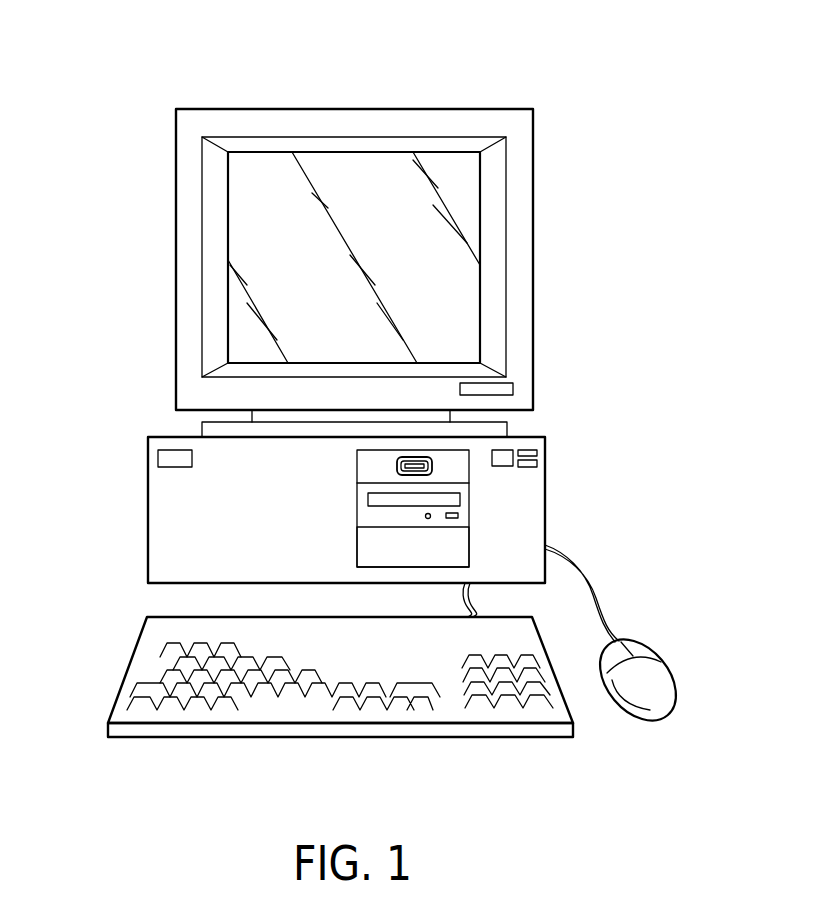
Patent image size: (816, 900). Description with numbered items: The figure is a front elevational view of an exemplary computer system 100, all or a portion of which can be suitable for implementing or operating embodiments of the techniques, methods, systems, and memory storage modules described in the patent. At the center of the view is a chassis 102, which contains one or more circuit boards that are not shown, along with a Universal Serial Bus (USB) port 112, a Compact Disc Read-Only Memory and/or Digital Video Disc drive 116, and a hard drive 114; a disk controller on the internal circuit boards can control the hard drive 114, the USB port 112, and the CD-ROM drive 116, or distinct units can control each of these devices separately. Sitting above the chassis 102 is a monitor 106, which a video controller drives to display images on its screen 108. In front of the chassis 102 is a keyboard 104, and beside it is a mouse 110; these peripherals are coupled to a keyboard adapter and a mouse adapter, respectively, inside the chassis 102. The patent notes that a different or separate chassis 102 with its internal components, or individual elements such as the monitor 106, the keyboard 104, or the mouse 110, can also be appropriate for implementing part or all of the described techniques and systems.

The computer system 100 is at (528, 82).
The chassis 102 is at (148, 513).
The keyboard 104 is at (128, 658).
The monitor 106 is at (247, 109).
The screen 108 is at (275, 262).
The mouse 110 is at (657, 670).
The Universal Serial Bus (USB) port 112 is at (433, 462).
The hard drive 114 is at (462, 545).
The Compact Disc Read-Only Memory (CD-ROM) and/or Digital Video Disc (DVD) drive 116 is at (462, 506).